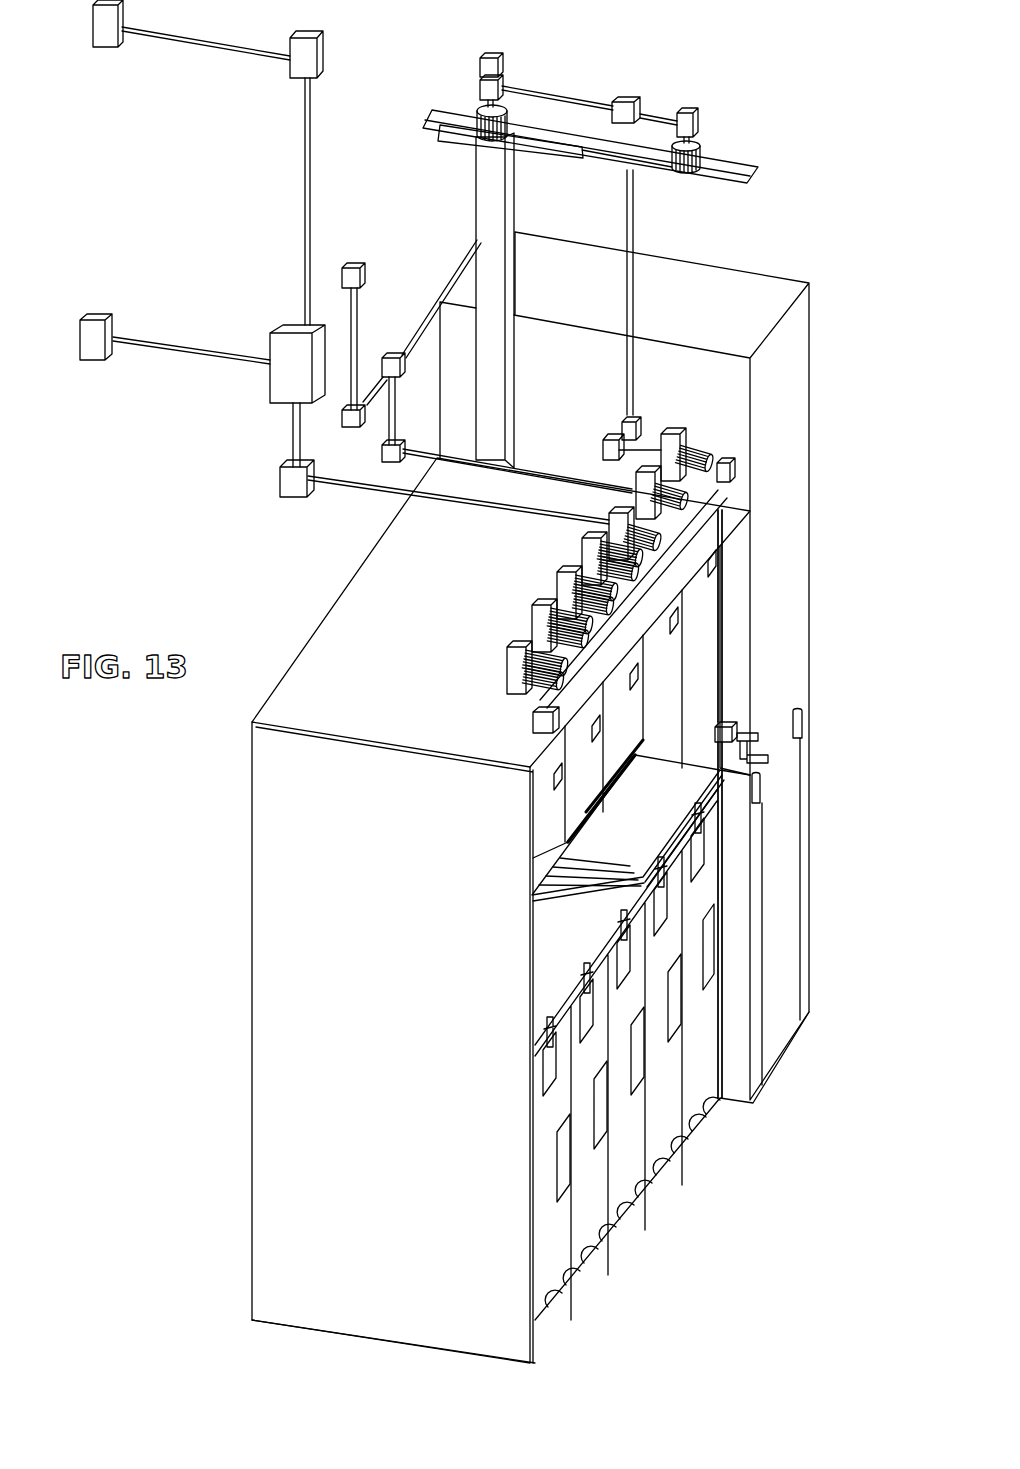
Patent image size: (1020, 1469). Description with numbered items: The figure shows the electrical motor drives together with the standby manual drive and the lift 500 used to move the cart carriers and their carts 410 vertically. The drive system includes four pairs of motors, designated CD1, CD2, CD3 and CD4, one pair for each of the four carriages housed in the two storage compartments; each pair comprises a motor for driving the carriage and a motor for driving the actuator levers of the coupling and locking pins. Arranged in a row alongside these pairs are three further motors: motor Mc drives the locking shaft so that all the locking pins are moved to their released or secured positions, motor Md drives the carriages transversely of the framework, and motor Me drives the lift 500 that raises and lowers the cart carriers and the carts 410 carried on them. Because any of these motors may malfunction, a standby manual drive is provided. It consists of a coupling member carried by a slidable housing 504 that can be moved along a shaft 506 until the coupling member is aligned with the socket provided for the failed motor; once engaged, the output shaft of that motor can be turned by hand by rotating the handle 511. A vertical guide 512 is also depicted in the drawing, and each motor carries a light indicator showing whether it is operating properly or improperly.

The lift 500 is at (824, 874).
The slidable housing 504 is at (730, 503).
The shaft 506 is at (560, 692).
The handle 511 is at (768, 760).
The vertical guide rail 512 is at (730, 628).
The carts 410 is at (615, 1238).
The motor pair CD1 is at (507, 683).
The motor pair CD2 is at (535, 622).
The motor pair CD3 is at (565, 575).
The motor pair CD4 is at (593, 550).
The motor Mc is at (612, 512).
The motor Md is at (652, 470).
The motor Me is at (700, 447).